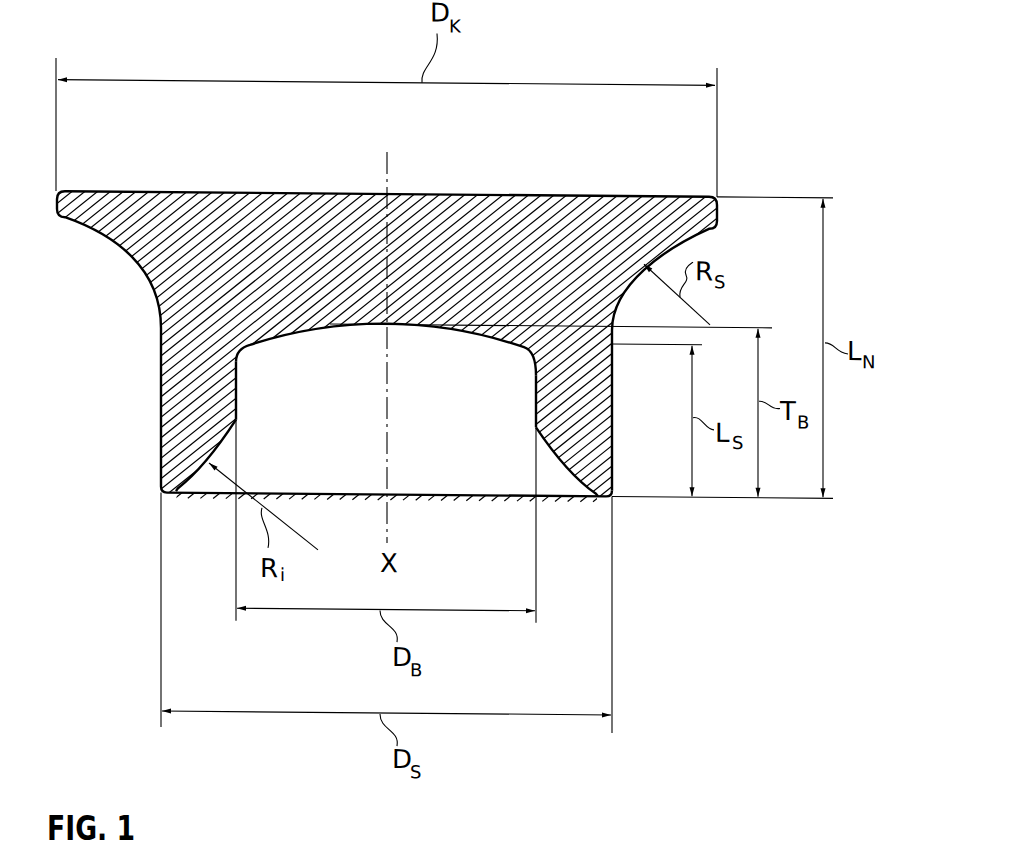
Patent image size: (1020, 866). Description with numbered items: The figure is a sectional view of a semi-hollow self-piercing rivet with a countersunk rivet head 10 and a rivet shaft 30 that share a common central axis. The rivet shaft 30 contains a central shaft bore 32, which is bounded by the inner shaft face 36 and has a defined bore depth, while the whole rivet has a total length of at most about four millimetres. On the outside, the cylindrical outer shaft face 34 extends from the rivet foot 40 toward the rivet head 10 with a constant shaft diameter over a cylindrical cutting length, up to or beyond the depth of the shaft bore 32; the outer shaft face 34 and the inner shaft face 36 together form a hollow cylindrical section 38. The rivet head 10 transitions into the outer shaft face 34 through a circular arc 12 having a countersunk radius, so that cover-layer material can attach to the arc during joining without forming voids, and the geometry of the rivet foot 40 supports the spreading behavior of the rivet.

The rivet head 10 is at (267, 214).
The circular arc 12 is at (131, 255).
The rivet shaft 30 is at (182, 376).
The central shaft bore 32 is at (434, 452).
The outer shaft face 34 is at (613, 376).
The inner shaft face 36 is at (238, 378).
The hollow cylindrical section 38 is at (534, 390).
The rivet foot 40 is at (180, 467).